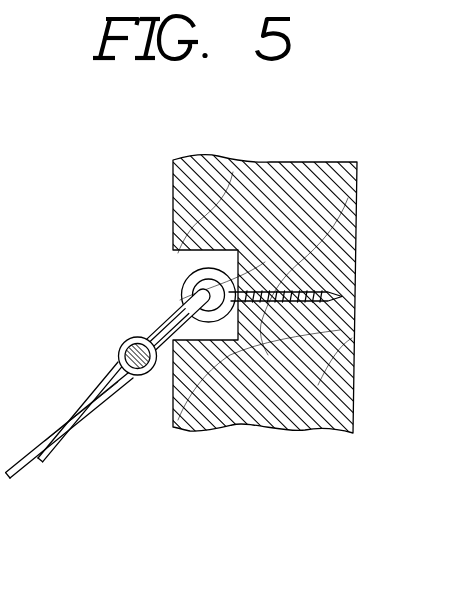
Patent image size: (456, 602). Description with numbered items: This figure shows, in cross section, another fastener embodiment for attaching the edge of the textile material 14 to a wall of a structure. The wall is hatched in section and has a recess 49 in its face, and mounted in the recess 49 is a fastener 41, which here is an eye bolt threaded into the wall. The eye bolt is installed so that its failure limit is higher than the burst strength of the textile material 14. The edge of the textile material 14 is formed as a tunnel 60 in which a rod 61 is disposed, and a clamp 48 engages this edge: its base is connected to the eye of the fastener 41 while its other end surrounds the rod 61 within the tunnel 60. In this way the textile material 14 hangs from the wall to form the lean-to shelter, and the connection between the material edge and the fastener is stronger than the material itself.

The recess 49 is at (172, 253).
The fastener 41 is at (184, 283).
The clamp 48 is at (155, 332).
The rod 61 is at (132, 338).
The tunnel 60 is at (116, 372).
The textile material 14 is at (72, 413).